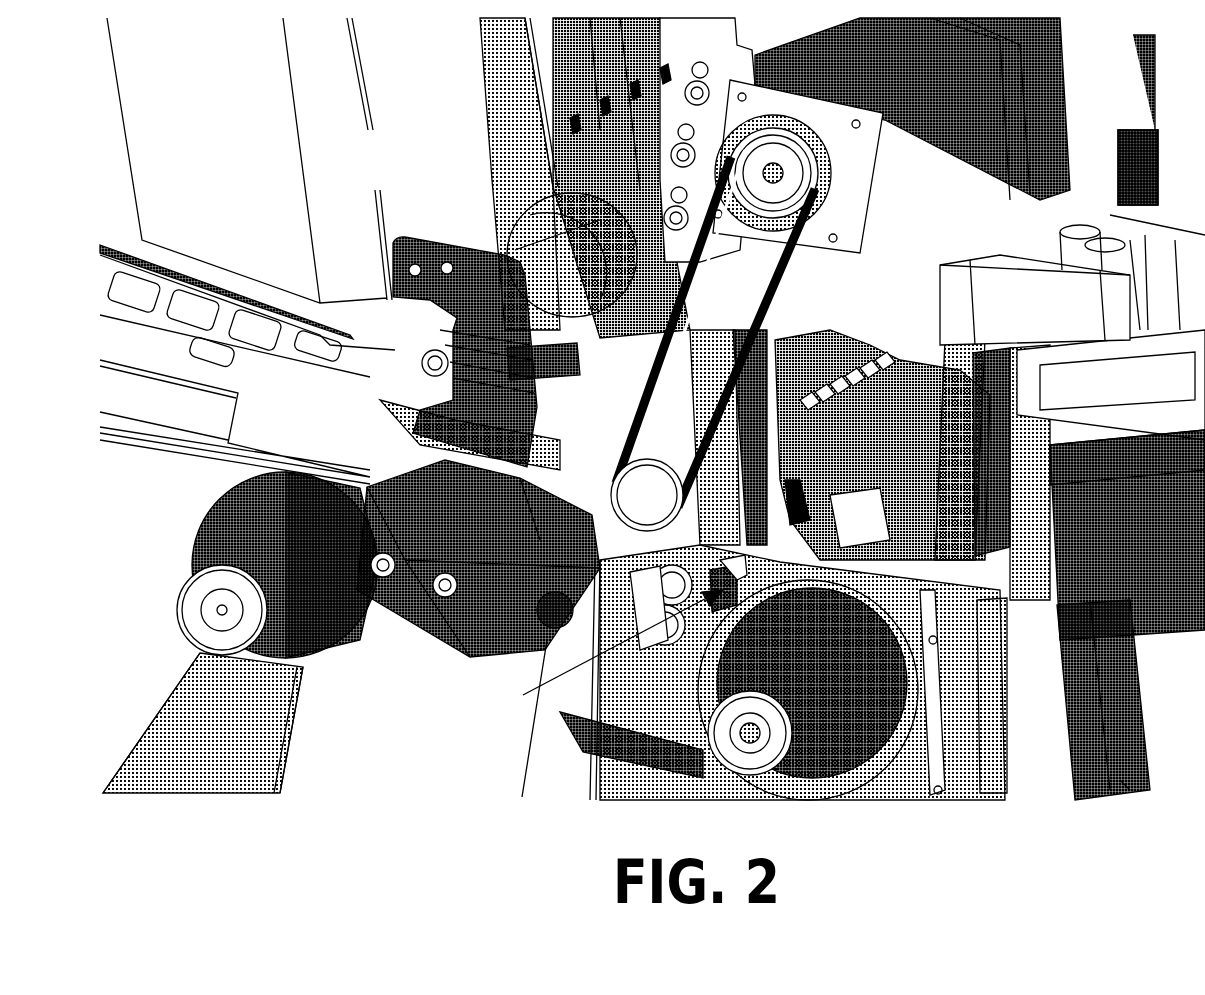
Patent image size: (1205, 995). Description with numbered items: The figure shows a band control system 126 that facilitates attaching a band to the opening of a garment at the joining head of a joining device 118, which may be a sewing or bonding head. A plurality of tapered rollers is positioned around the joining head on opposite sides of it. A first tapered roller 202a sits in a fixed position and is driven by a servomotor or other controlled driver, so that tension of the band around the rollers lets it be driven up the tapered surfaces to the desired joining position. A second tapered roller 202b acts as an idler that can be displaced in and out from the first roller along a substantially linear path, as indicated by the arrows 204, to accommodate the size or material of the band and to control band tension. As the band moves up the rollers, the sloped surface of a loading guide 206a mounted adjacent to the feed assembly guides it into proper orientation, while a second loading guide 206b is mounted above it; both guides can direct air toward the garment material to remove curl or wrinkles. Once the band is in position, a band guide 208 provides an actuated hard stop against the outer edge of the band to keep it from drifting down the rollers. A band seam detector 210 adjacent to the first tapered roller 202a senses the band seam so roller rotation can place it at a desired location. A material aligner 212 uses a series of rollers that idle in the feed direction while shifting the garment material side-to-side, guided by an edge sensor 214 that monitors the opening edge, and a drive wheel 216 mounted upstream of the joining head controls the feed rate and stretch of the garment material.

The joining device 118 is at (412, 183).
The band control system 126 is at (473, 760).
The first tapered roller 202a is at (823, 720).
The second tapered roller 202b is at (313, 538).
The arrows 204 is at (340, 686).
The loading guide 206a is at (463, 620).
The second loading guide 206b is at (420, 427).
The band guide 208 is at (670, 605).
The band seam detector 210 is at (930, 790).
The material aligner 212 is at (897, 485).
The edge sensor 214 is at (538, 653).
The drive wheel 216 is at (667, 505).